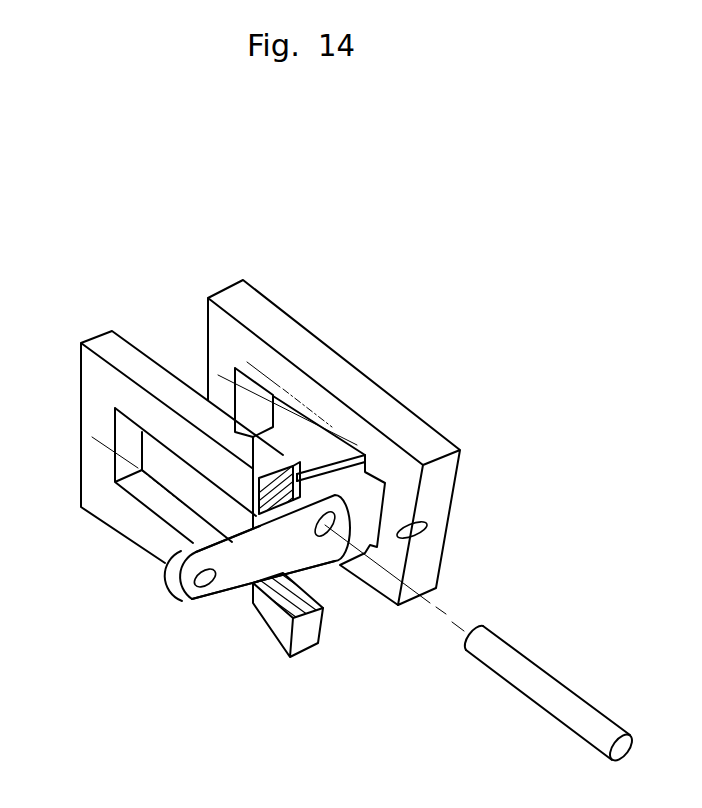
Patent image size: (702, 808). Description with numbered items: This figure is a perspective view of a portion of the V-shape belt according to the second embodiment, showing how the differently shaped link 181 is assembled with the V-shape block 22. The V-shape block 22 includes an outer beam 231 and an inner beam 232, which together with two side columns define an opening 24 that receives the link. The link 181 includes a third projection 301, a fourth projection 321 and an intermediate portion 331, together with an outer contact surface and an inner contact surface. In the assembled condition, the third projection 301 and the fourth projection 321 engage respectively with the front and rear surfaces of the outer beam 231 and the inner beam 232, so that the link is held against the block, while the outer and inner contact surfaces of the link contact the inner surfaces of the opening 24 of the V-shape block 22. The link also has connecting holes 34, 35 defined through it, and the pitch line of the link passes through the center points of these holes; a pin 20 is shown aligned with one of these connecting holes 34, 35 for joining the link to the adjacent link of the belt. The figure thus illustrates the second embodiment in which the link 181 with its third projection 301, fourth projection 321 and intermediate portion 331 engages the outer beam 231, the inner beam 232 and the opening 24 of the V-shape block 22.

The pin 20 is at (533, 680).
The V-shape block 22 is at (378, 402).
The opening 24 is at (427, 524).
The connecting hole 34 is at (192, 598).
The connecting hole 35 is at (331, 537).
The link 181 is at (232, 577).
The outer beam 231 is at (289, 471).
The inner beam 232 is at (258, 587).
The third projection 301 is at (286, 469).
The fourth projection 321 is at (250, 562).
The intermediate portion 331 is at (308, 548).